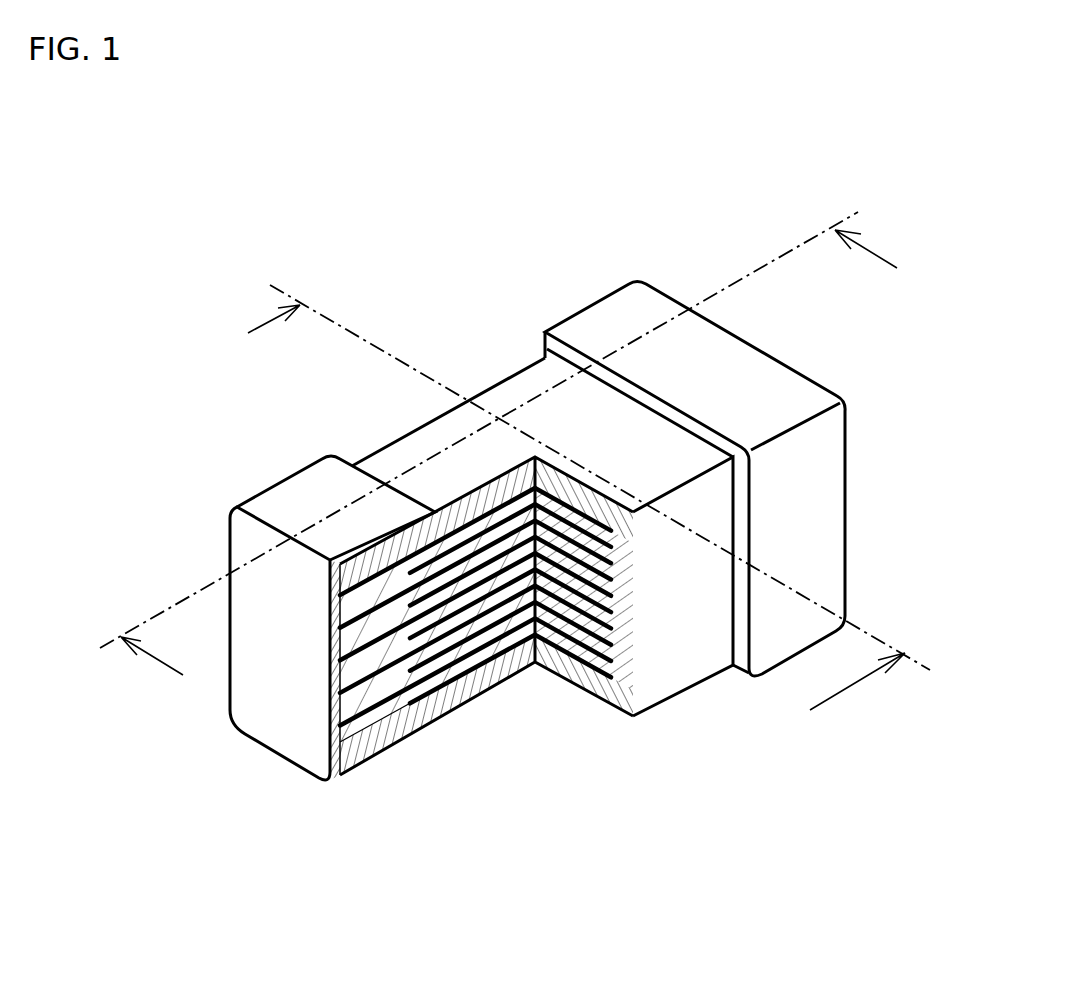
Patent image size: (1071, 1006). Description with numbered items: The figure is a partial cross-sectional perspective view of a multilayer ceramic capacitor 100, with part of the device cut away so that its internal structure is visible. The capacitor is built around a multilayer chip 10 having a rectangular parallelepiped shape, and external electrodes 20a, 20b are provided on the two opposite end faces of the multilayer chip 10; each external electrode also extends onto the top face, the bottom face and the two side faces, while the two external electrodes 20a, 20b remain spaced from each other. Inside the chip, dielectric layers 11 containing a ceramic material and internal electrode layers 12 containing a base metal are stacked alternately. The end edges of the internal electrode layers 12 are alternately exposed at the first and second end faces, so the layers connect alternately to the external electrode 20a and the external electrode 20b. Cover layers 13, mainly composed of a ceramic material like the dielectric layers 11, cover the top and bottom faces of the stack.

The multilayer ceramic capacitor 100 is at (897, 213).
The multilayer chip 10 is at (366, 431).
The dielectric layer 11 is at (487, 668).
The internal electrode layer 12 is at (500, 634).
The cover layer 13 is at (500, 390).
The external electrode 20a is at (262, 490).
The external electrode 20b is at (592, 322).